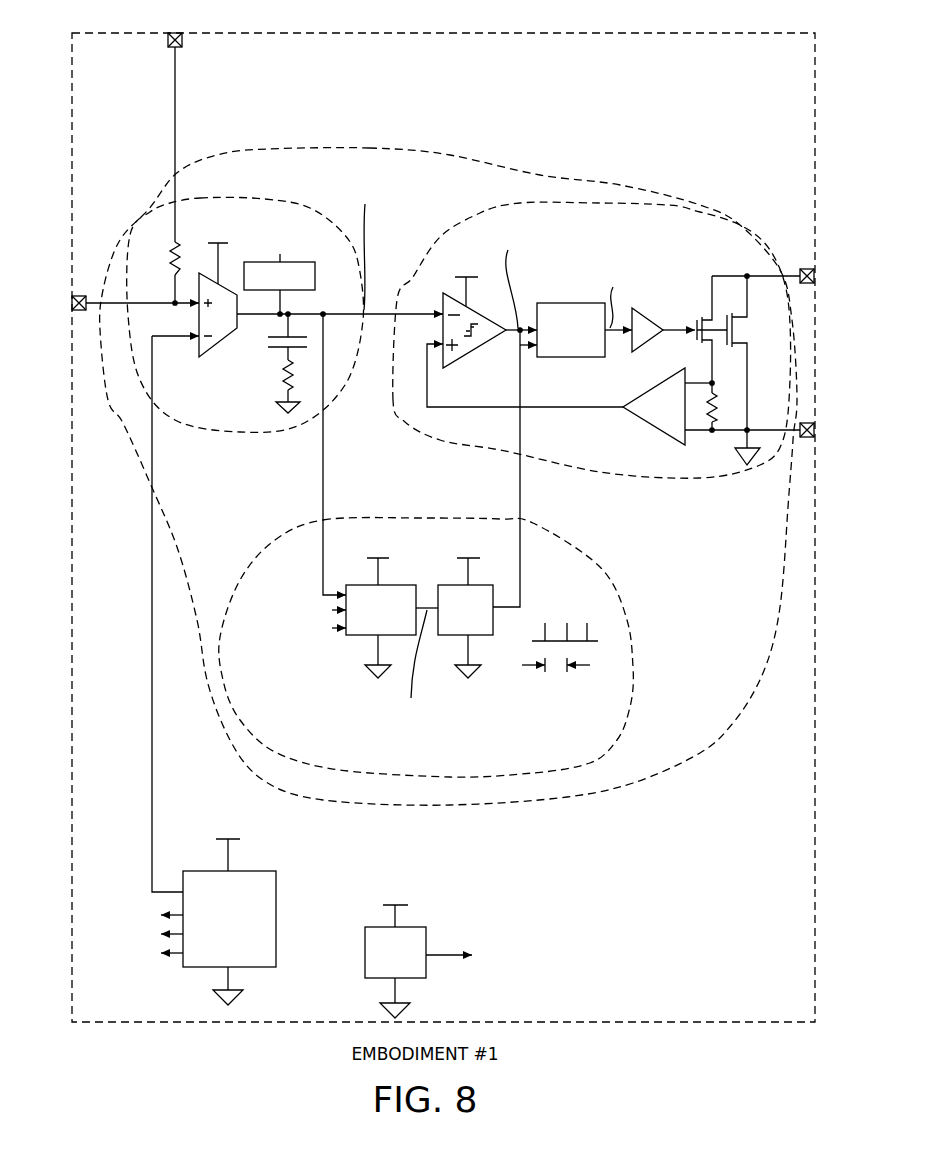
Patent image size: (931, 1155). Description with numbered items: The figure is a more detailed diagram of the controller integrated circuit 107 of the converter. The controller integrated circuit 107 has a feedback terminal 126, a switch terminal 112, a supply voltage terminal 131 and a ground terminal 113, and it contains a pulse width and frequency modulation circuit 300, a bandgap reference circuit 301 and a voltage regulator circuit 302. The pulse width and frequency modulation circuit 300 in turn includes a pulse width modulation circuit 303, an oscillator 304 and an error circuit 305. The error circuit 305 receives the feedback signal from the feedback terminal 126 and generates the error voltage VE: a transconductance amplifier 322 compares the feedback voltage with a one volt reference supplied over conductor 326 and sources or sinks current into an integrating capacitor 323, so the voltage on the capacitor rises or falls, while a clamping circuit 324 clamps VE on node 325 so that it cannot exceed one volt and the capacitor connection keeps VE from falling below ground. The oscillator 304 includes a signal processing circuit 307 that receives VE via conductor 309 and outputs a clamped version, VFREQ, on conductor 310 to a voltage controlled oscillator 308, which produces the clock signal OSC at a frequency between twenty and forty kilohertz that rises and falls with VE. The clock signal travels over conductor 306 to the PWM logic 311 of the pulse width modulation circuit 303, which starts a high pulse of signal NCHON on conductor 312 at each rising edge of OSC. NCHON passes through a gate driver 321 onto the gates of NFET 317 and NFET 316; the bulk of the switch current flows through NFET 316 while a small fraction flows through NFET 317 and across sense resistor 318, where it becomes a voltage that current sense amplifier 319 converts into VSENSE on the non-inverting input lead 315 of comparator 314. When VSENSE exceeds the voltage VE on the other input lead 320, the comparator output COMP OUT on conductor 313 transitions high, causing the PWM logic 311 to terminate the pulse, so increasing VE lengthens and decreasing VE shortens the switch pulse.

The controller integrated circuit 107 is at (603, 32).
The supply voltage terminal 131 is at (182, 46).
The feedback terminal 126 is at (118, 310).
The switch terminal 112 is at (813, 275).
The ground terminal 113 is at (813, 428).
The pulse width and frequency modulation circuit 300 is at (371, 147).
The pulse width modulation circuit 303 is at (668, 203).
The oscillator 304 is at (615, 582).
The error circuit 305 is at (152, 218).
The bandgap reference circuit 301 is at (270, 871).
The voltage regulator circuit 302 is at (363, 927).
The conductor 306 is at (521, 481).
The signal processing circuit 307 is at (402, 585).
The voltage controlled oscillator 308 is at (445, 585).
The conductor 309 is at (324, 455).
The conductor 310 is at (433, 612).
The PWM logic 311 is at (556, 303).
The conductor 312 is at (615, 333).
The conductor 313 is at (515, 335).
The comparator 314 is at (475, 315).
The non-inverting input lead 315 is at (441, 345).
The NFET 316 is at (740, 331).
The NFET 317 is at (698, 314).
The sense resistor 318 is at (713, 385).
The current sense amplifier 319 is at (664, 383).
The input lead 320 is at (441, 313).
The gate driver 321 is at (649, 306).
The transconductance amplifier 322 is at (214, 358).
The integrating capacitor 323 is at (268, 346).
The clamping circuit 324 is at (316, 275).
The VE node 325 is at (343, 317).
The conductor 326 is at (153, 455).